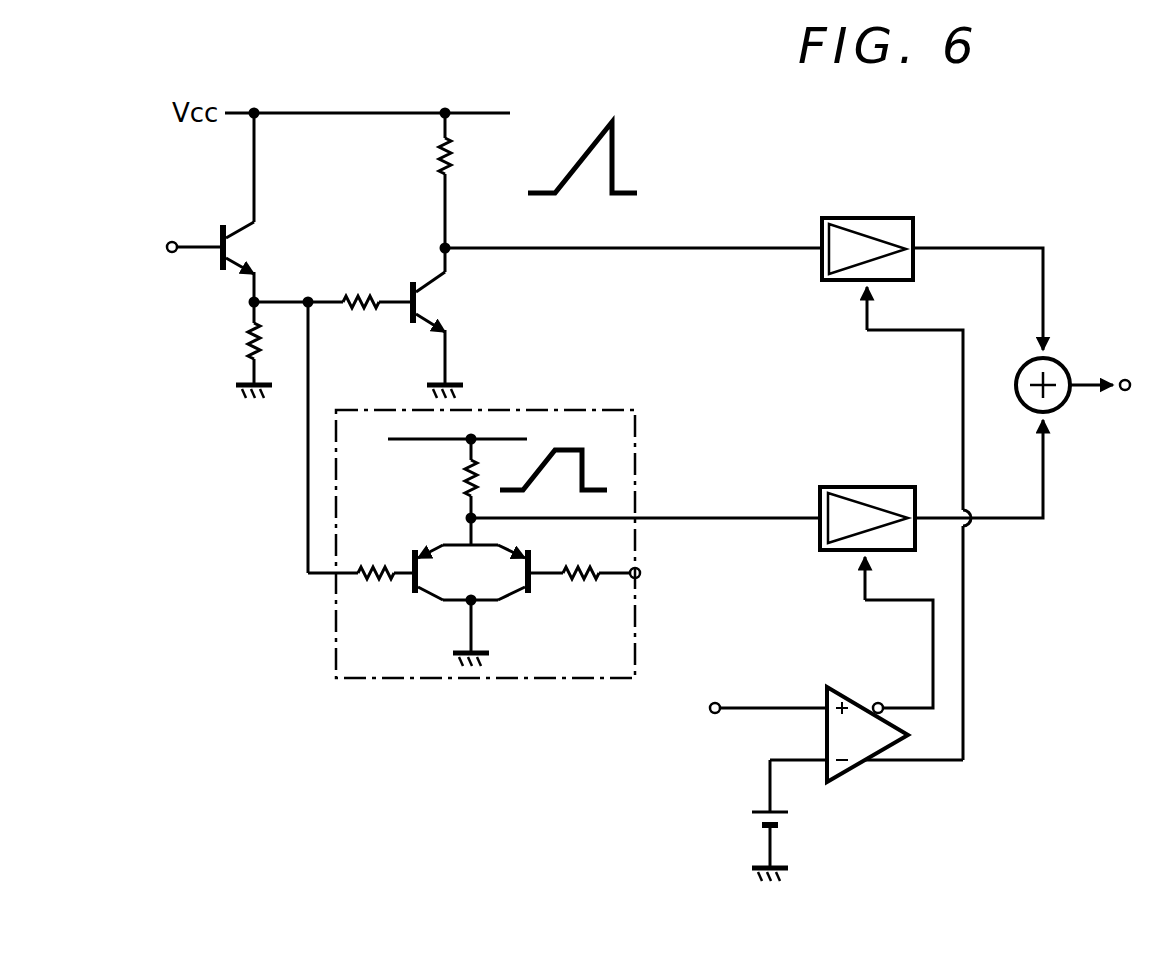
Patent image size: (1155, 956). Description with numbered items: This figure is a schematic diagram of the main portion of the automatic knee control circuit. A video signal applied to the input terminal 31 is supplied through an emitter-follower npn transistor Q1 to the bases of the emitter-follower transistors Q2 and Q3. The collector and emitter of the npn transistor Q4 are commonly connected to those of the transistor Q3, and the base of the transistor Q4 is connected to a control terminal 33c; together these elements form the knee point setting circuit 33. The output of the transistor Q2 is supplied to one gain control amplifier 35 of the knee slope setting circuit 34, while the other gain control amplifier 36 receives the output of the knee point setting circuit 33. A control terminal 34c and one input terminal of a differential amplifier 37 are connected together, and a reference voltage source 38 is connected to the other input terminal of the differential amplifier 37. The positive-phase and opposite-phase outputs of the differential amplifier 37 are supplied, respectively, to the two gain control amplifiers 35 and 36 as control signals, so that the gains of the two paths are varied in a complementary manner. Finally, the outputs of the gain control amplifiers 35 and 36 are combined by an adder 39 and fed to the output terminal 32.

The input terminal 31 is at (172, 252).
The output terminal 32 is at (1125, 391).
The knee point setting circuit 33 is at (504, 544).
The control terminal 33c is at (640, 576).
The knee slope setting circuit 34 is at (847, 446).
The control terminal 34c is at (715, 713).
The gain control amplifier 35 is at (853, 216).
The gain control amplifier 36 is at (836, 552).
The differential amplifier 37 is at (846, 773).
The reference voltage source 38 is at (778, 822).
The adder 39 is at (1063, 368).
The emitter-follower npn transistor Q1 is at (228, 246).
The emitter-follower transistor Q2 is at (418, 304).
The emitter-follower transistor Q3 is at (412, 592).
The npn transistor Q4 is at (531, 592).